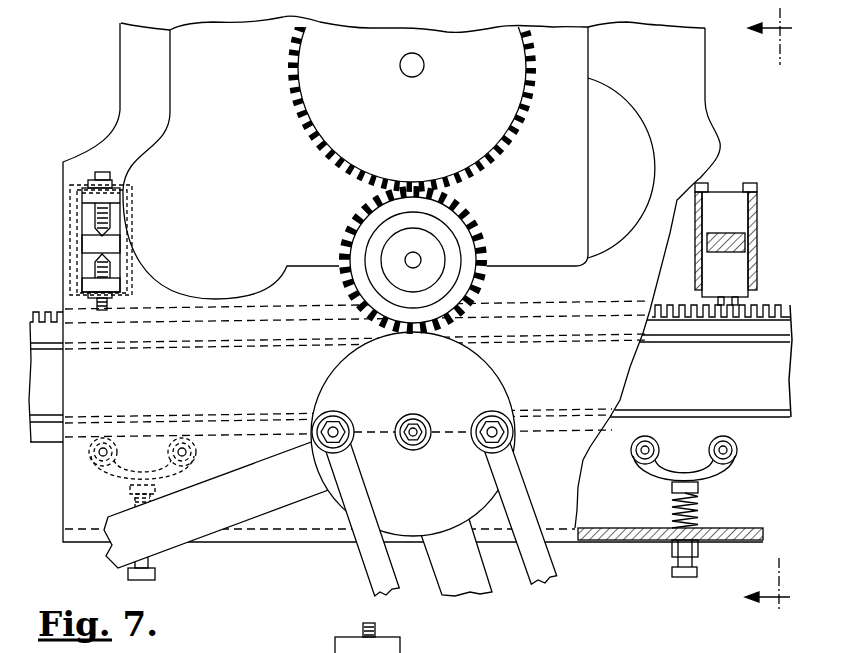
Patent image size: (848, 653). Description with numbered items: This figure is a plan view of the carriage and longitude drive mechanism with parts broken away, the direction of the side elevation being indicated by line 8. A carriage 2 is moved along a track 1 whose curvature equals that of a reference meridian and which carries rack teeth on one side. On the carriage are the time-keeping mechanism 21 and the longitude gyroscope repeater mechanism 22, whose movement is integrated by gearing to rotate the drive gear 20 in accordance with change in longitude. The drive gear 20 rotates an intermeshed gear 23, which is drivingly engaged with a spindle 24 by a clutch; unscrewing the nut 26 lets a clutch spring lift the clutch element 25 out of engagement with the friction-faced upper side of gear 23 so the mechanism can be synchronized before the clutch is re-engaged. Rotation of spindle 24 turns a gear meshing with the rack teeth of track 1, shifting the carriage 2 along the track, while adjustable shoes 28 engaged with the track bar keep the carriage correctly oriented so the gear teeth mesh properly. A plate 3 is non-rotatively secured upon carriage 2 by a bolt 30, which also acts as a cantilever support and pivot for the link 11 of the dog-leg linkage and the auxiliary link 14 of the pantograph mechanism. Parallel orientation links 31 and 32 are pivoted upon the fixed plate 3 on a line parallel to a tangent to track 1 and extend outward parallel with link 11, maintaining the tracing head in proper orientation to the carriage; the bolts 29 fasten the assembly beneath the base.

The track 1 is at (701, 361).
The carriage 2 is at (413, 282).
The plate 3 is at (487, 386).
The line 8— 8 is at (771, 313).
The link 11 is at (450, 548).
The auxiliary link 14 is at (227, 502).
The drive gear 20 is at (412, 93).
The time-keeping mechanism 21 is at (389, 163).
The repeater mechanism 22 is at (113, 241).
The gear 23 is at (478, 222).
The spindle 24 is at (404, 257).
The clutch element 25 is at (456, 259).
The nut 26 is at (370, 260).
The adjustable shoes 28 is at (98, 241).
The bolt 29 is at (146, 579).
The bolt 30 is at (413, 426).
The parallel orientation link 31 is at (377, 555).
The parallel orientation link 32 is at (552, 567).